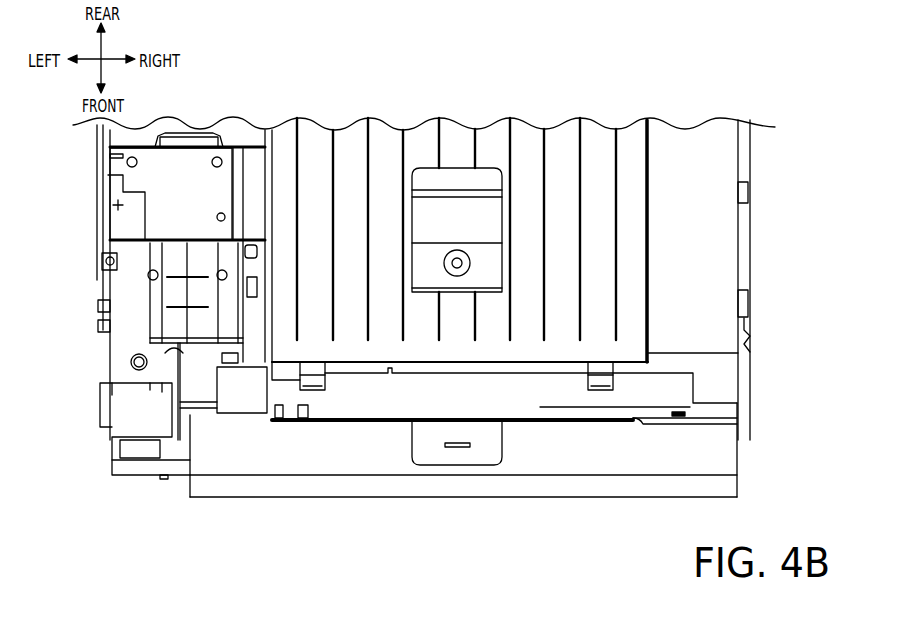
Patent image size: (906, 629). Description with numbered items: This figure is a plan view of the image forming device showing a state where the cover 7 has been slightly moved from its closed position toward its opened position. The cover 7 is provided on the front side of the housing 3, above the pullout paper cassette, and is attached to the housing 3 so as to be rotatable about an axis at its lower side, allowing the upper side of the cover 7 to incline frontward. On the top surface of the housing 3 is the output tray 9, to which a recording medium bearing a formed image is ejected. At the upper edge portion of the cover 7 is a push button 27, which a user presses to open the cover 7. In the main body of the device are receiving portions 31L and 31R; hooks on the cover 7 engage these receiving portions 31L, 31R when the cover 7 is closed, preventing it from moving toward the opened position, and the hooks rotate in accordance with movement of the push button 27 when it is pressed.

The housing 3 is at (726, 255).
The cover 7 is at (655, 485).
The output tray 9 is at (446, 128).
The push button 27 is at (424, 450).
The receiving portion 31L is at (325, 391).
The receiving portion 31R is at (588, 393).